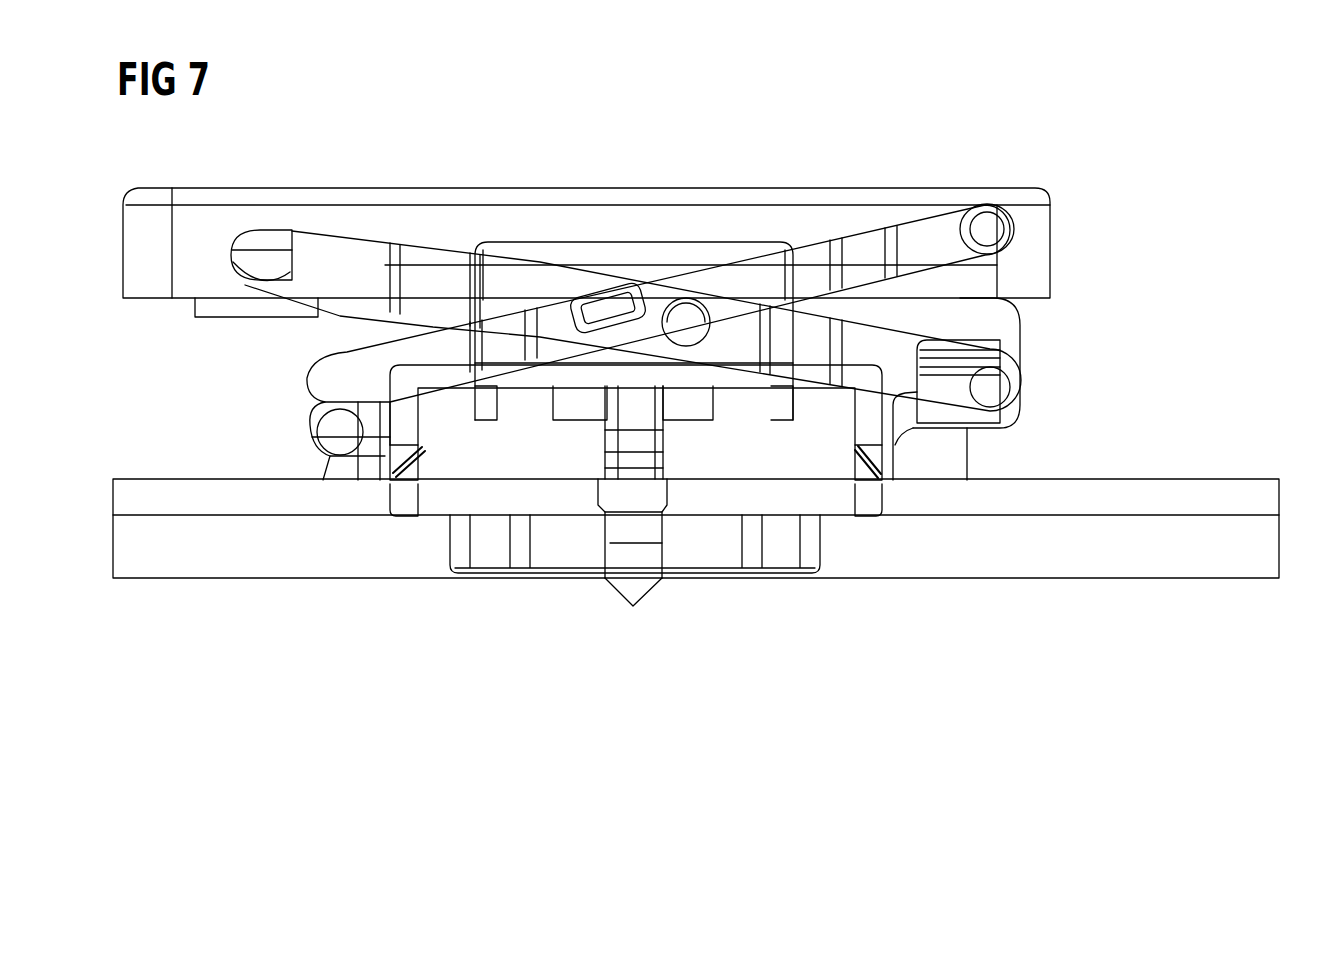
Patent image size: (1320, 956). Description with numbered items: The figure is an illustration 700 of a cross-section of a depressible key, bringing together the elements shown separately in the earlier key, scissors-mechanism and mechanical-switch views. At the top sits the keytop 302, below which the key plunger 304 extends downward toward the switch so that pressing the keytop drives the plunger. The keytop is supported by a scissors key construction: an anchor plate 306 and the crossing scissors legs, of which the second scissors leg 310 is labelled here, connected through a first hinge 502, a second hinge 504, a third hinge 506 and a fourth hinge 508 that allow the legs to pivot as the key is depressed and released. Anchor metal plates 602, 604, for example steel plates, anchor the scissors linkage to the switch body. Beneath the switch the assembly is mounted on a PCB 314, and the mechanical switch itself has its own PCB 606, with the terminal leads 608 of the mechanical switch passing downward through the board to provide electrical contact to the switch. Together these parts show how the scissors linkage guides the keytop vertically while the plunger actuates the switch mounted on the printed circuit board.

The illustration 700 is at (1177, 157).
The keytop 302 is at (740, 187).
The key plunger 304 is at (593, 263).
The anchor plate 306 is at (353, 242).
The second scissors leg 310 is at (307, 385).
The PCB 314 is at (1150, 490).
The first hinge 502 is at (253, 253).
The second hinge 504 is at (980, 230).
The third hinge 506 is at (330, 457).
The fourth hinge 508 is at (1010, 352).
The anchor metal plate 602 is at (378, 453).
The anchor metal plate 604 is at (942, 452).
The PCB 606 is at (1030, 553).
The terminal leads 608 is at (640, 592).